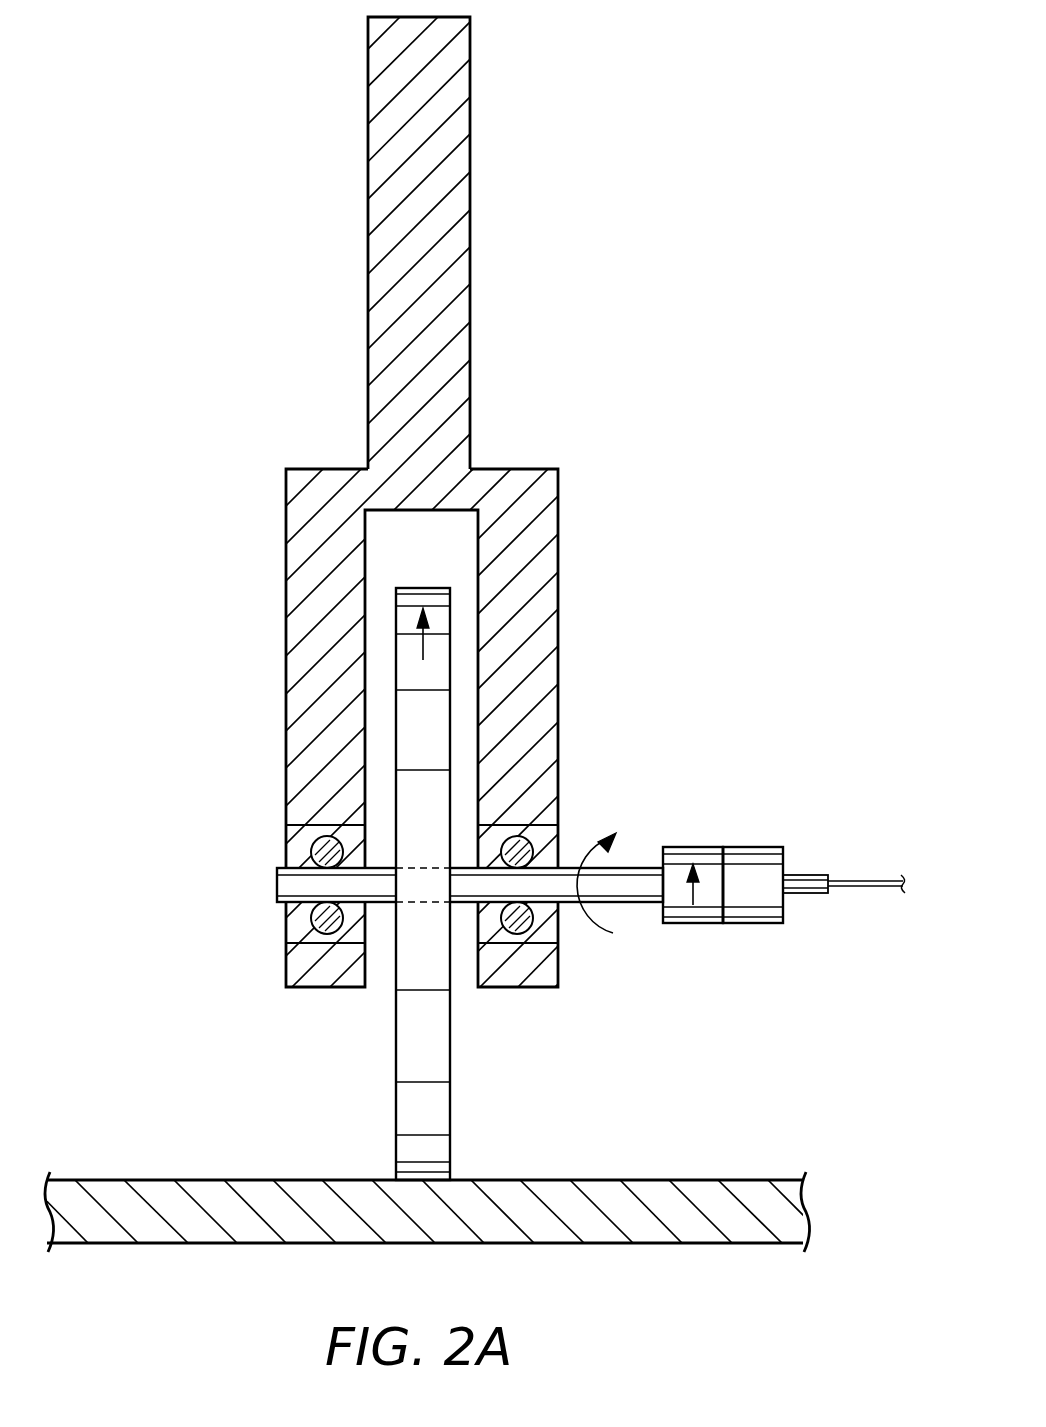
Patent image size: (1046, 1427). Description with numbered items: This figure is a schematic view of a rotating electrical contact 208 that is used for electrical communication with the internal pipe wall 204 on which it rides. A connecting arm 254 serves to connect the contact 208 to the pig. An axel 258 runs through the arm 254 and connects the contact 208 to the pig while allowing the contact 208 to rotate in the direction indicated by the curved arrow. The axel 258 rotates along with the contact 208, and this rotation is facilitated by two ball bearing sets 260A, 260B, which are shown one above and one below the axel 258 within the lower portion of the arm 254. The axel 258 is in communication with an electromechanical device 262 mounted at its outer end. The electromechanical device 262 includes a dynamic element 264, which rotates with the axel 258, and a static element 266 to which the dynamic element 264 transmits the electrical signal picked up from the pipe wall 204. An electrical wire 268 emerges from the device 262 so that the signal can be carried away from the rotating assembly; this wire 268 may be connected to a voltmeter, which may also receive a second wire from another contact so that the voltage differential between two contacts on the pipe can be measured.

The connecting arm 254 is at (370, 258).
The internal pipe wall 204 is at (240, 1245).
The electrical contact 208 is at (402, 1103).
The axel 258 is at (277, 888).
The ball bearing set 260A is at (288, 833).
The ball bearing set 260B is at (557, 930).
The electromechanical device 262 is at (722, 923).
The dynamic element 264 is at (682, 850).
The static element 266 is at (760, 907).
The electrical wire 268 is at (885, 882).